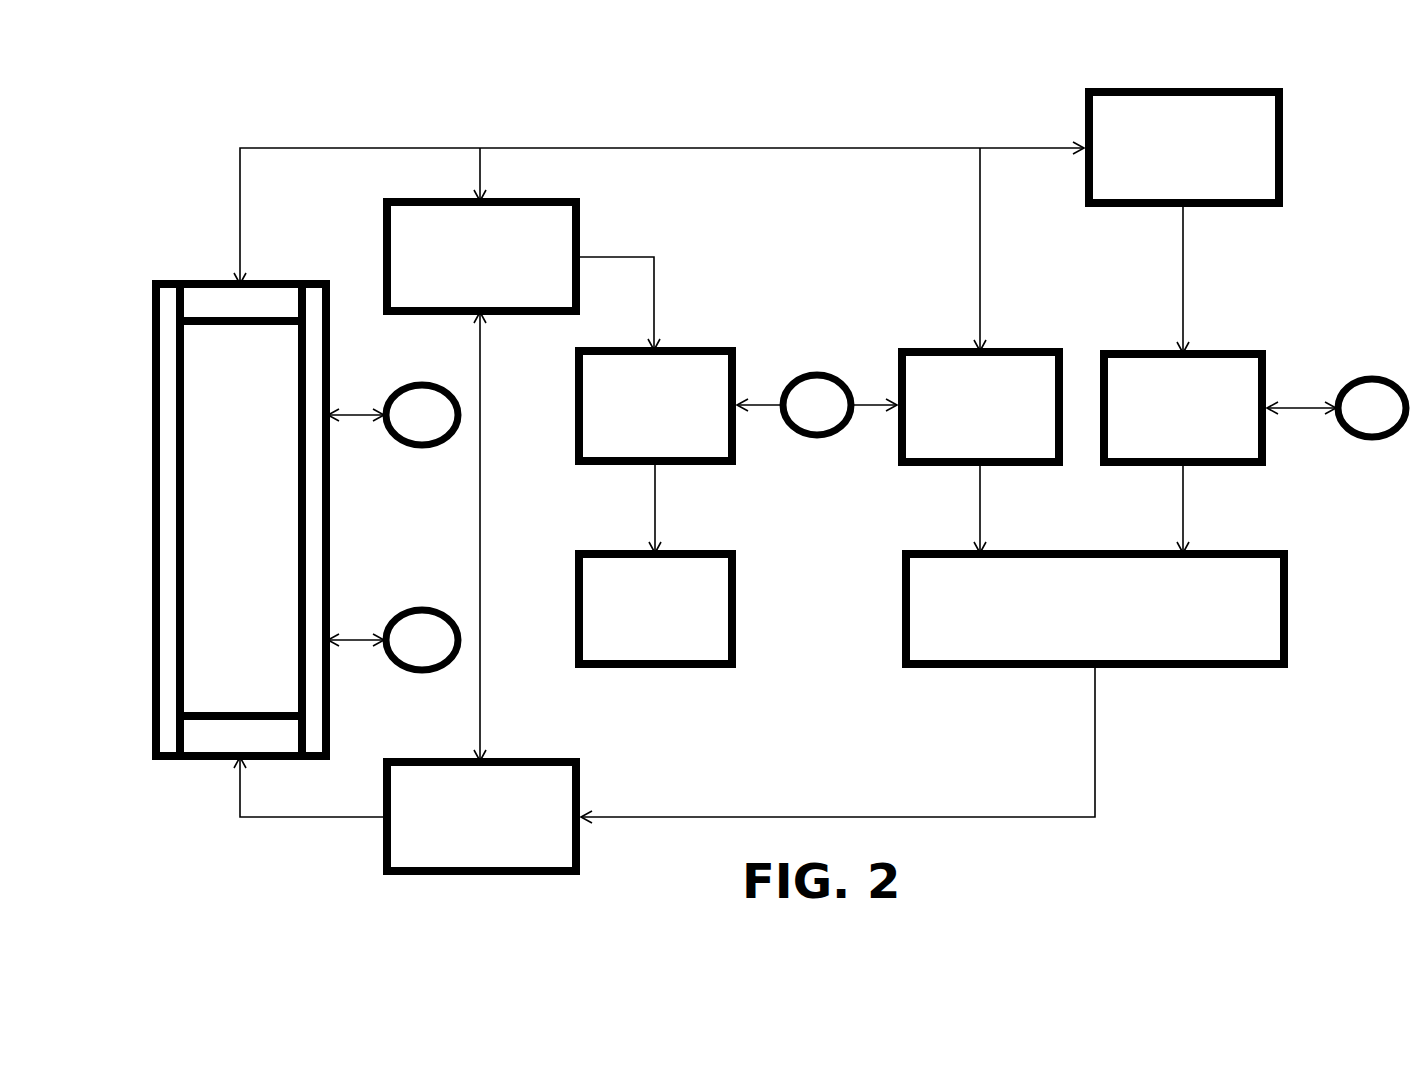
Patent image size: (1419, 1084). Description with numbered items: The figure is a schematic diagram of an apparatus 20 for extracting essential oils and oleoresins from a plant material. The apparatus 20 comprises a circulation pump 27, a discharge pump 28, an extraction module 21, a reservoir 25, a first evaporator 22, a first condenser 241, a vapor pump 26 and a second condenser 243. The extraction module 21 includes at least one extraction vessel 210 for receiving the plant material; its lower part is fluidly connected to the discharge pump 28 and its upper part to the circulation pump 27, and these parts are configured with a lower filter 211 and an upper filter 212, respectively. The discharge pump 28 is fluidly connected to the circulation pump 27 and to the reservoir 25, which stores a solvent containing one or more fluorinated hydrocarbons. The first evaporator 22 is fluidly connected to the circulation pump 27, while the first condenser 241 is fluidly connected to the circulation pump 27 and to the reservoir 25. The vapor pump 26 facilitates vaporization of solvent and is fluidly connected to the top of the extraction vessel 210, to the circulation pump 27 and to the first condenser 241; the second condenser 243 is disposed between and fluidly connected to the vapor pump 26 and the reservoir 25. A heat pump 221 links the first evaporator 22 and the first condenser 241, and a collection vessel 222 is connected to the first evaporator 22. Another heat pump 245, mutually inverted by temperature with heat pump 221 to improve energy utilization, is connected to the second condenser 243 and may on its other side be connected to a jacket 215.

The apparatus 20 is at (160, 147).
The extraction module 21 is at (151, 387).
The extraction vessel 210 is at (153, 520).
The lower filter 211 is at (240, 730).
The upper filter 212 is at (214, 305).
The jacket 215 is at (313, 405).
The first evaporator 22 is at (627, 408).
The heat pump 221 is at (830, 398).
The collection vessel 222 is at (618, 615).
The first condenser 241 is at (1012, 375).
The second condenser 243 is at (1237, 378).
The heat pump 245 is at (416, 668).
The reservoir 25 is at (997, 630).
The vapor pump 26 is at (1250, 150).
The circulation pump 27 is at (552, 228).
The discharge pump 28 is at (450, 845).